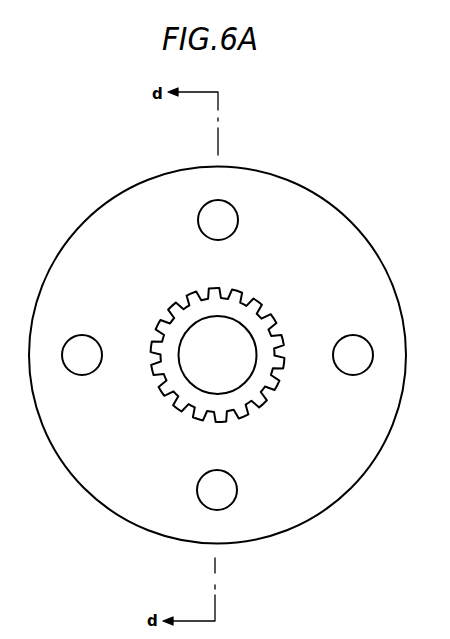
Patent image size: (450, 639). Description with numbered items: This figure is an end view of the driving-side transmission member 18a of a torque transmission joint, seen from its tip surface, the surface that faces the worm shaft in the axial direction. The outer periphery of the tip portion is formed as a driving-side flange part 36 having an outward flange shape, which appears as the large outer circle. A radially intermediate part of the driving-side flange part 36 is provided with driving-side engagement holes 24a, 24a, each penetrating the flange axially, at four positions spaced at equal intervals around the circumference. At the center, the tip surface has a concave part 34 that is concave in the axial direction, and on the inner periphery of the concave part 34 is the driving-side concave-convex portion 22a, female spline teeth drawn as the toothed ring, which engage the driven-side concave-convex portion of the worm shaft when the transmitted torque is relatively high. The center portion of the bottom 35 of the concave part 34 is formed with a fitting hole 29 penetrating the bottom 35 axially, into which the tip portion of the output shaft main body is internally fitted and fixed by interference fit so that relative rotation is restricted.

The driving-side transmission member 18a is at (113, 233).
The driving-side engagement holes 24a is at (217, 202).
The driving-side flange part 36 is at (310, 235).
The driving-side concave-convex portion 22a is at (258, 306).
The bottom 35 is at (262, 330).
The fitting hole 29 is at (226, 381).
The concave part 34 is at (178, 398).